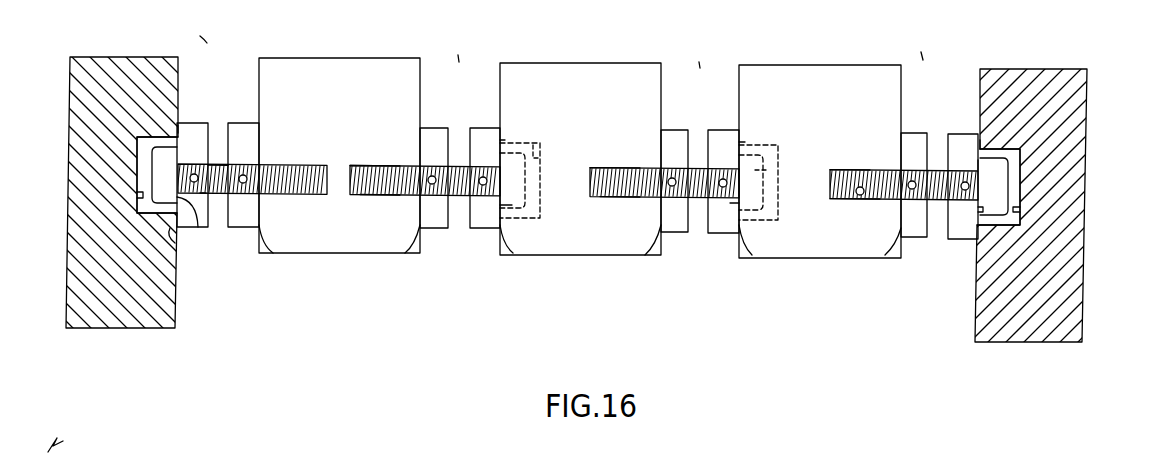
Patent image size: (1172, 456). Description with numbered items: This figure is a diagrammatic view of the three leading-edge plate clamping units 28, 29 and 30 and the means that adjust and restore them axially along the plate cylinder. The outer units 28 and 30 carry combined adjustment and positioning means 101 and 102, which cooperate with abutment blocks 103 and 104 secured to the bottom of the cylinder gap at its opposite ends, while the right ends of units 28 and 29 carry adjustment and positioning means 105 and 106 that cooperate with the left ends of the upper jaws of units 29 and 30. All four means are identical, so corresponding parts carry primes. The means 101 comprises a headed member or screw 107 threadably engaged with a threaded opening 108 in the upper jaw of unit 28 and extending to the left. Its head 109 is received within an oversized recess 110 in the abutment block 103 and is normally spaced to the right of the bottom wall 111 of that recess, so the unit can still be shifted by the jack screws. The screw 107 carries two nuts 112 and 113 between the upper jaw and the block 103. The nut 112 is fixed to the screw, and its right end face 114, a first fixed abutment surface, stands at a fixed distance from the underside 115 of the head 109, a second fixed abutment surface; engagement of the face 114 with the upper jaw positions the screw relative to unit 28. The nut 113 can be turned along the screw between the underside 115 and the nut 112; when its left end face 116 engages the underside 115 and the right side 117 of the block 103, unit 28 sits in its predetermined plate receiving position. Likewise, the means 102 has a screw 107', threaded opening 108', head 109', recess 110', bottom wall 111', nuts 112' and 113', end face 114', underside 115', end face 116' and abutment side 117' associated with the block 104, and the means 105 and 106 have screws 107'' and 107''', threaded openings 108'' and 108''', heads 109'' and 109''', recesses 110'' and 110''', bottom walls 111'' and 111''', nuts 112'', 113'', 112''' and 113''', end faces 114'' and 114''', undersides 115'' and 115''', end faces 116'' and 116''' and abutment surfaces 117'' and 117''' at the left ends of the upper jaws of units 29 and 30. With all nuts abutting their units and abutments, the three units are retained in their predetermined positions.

The plate clamping unit 28 is at (388, 58).
The plate clamping unit 29 is at (556, 63).
The plate clamping unit 30 is at (850, 65).
The combined adjustment and positioning means 101 is at (218, 70).
The combined adjustment and positioning means 102 is at (927, 82).
The abutment block 103 is at (157, 329).
The abutment block 104 is at (1078, 124).
The adjustment and positioning means 105 is at (465, 86).
The adjustment and positioning means 106 is at (705, 87).
The headed member or screw 107 is at (232, 210).
The screw 107' is at (857, 158).
The screw 107'' is at (376, 215).
The screw 107''' is at (616, 207).
The threaded opening 108 is at (577, 165).
The threaded opening 108' is at (855, 211).
The threaded opening 108'' is at (377, 148).
The threaded opening 108''' is at (615, 154).
The head 109 is at (104, 160).
The head 109' is at (1060, 181).
The head 109'' is at (516, 200).
The head 109''' is at (785, 177).
The recess 110 is at (105, 175).
The recess 110' is at (1058, 187).
The recess 110'' is at (543, 180).
The recess 110''' is at (785, 171).
The bottom wall 111 is at (89, 213).
The bottom wall 111' is at (1075, 212).
The bottom wall 111'' is at (560, 156).
The bottom wall 111''' is at (793, 196).
The nut 112 is at (243, 124).
The nut 112' is at (919, 212).
The nut 112'' is at (445, 209).
The nut 112''' is at (677, 210).
The nut 113 is at (205, 162).
The nut 113' is at (942, 175).
The nut 113'' is at (468, 165).
The nut 113''' is at (702, 168).
The right end face 114 is at (284, 254).
The right end face 114' is at (875, 259).
The right end face 114'' is at (406, 256).
The right end face 114''' is at (634, 258).
The underside of head 115 is at (227, 237).
The underside of head 115' is at (957, 130).
The underside of head 115'' is at (496, 241).
The underside of head 115''' is at (730, 241).
The left end face 116 is at (191, 254).
The left end face 116' is at (965, 249).
The left end face 116'' is at (528, 122).
The left end face 116''' is at (765, 124).
The right side of abutment block 117 is at (195, 102).
The abutment side 117' is at (971, 105).
The abutment surface 117'' is at (524, 256).
The abutment surface 117''' is at (764, 256).